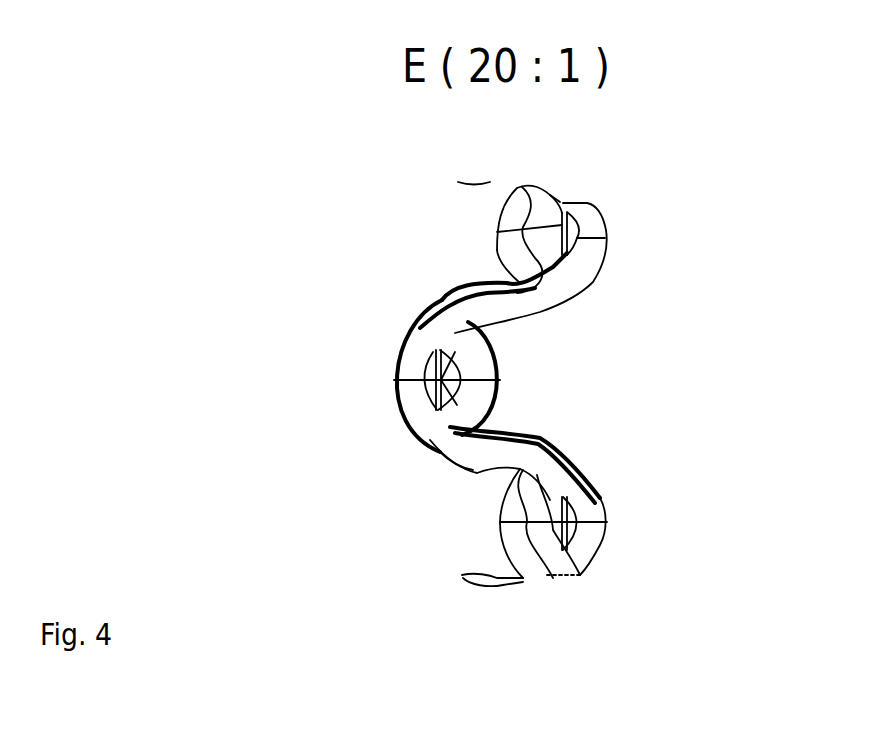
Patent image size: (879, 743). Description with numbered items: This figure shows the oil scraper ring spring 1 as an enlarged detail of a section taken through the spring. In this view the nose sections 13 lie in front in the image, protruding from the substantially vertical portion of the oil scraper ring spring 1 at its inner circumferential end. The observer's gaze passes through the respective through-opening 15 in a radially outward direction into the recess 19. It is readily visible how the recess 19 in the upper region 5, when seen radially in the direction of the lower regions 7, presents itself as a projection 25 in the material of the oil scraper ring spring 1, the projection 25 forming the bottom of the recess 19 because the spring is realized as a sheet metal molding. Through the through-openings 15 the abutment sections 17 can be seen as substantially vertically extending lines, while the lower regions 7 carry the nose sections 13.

The oil scraper ring spring 1 is at (245, 265).
The upper region 5 is at (425, 342).
The lower region 7 is at (580, 265).
The nose section 13 is at (423, 415).
The through-opening 15 is at (437, 394).
The abutment section 17 is at (432, 372).
The recess 19 is at (452, 388).
The projection 25 is at (483, 357).